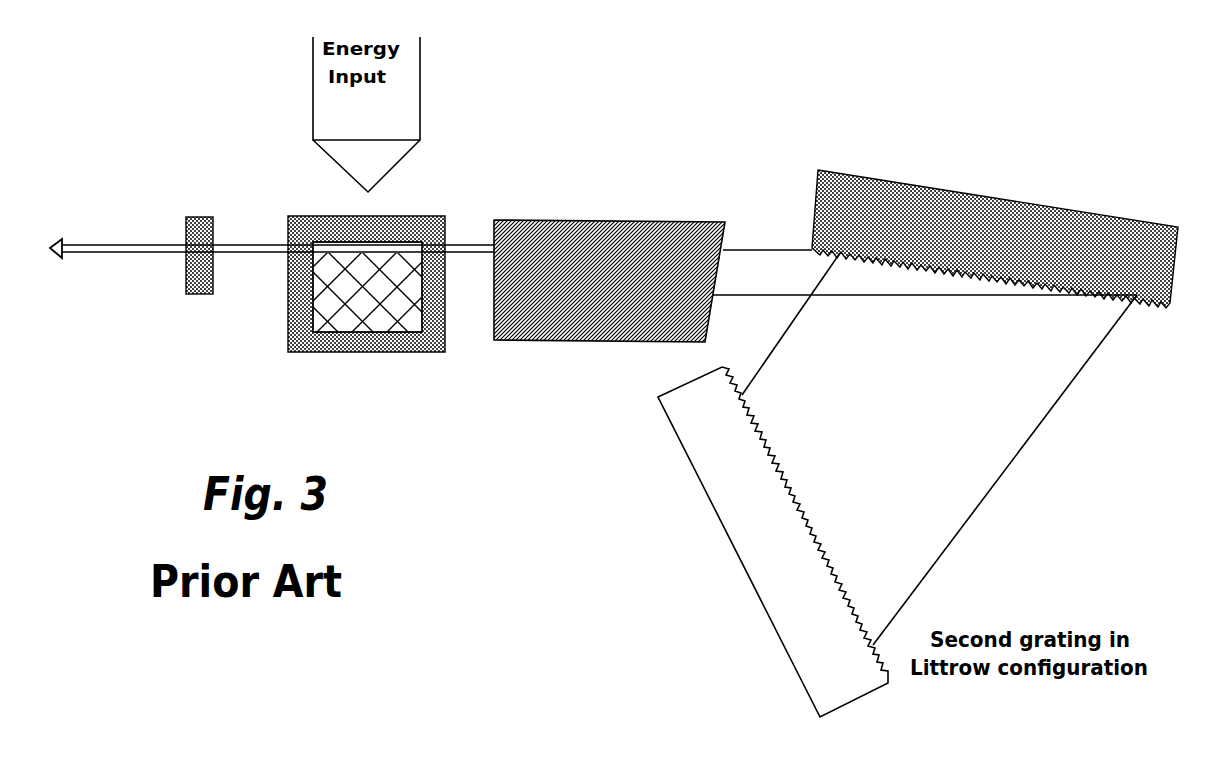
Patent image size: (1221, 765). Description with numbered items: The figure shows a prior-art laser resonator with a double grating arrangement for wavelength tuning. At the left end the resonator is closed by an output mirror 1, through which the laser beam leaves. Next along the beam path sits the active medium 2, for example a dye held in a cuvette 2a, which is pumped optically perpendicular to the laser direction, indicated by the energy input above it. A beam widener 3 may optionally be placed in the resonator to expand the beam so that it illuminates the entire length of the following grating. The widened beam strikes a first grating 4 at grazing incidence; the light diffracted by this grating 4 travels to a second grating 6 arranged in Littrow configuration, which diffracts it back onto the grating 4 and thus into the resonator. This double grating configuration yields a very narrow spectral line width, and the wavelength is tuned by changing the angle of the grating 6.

The output mirror 1 is at (198, 215).
The active medium 2 is at (338, 288).
The cuvette 2a is at (329, 352).
The beam widener 3 is at (620, 216).
The first grating 4 is at (988, 152).
The second grating 6 is at (846, 680).